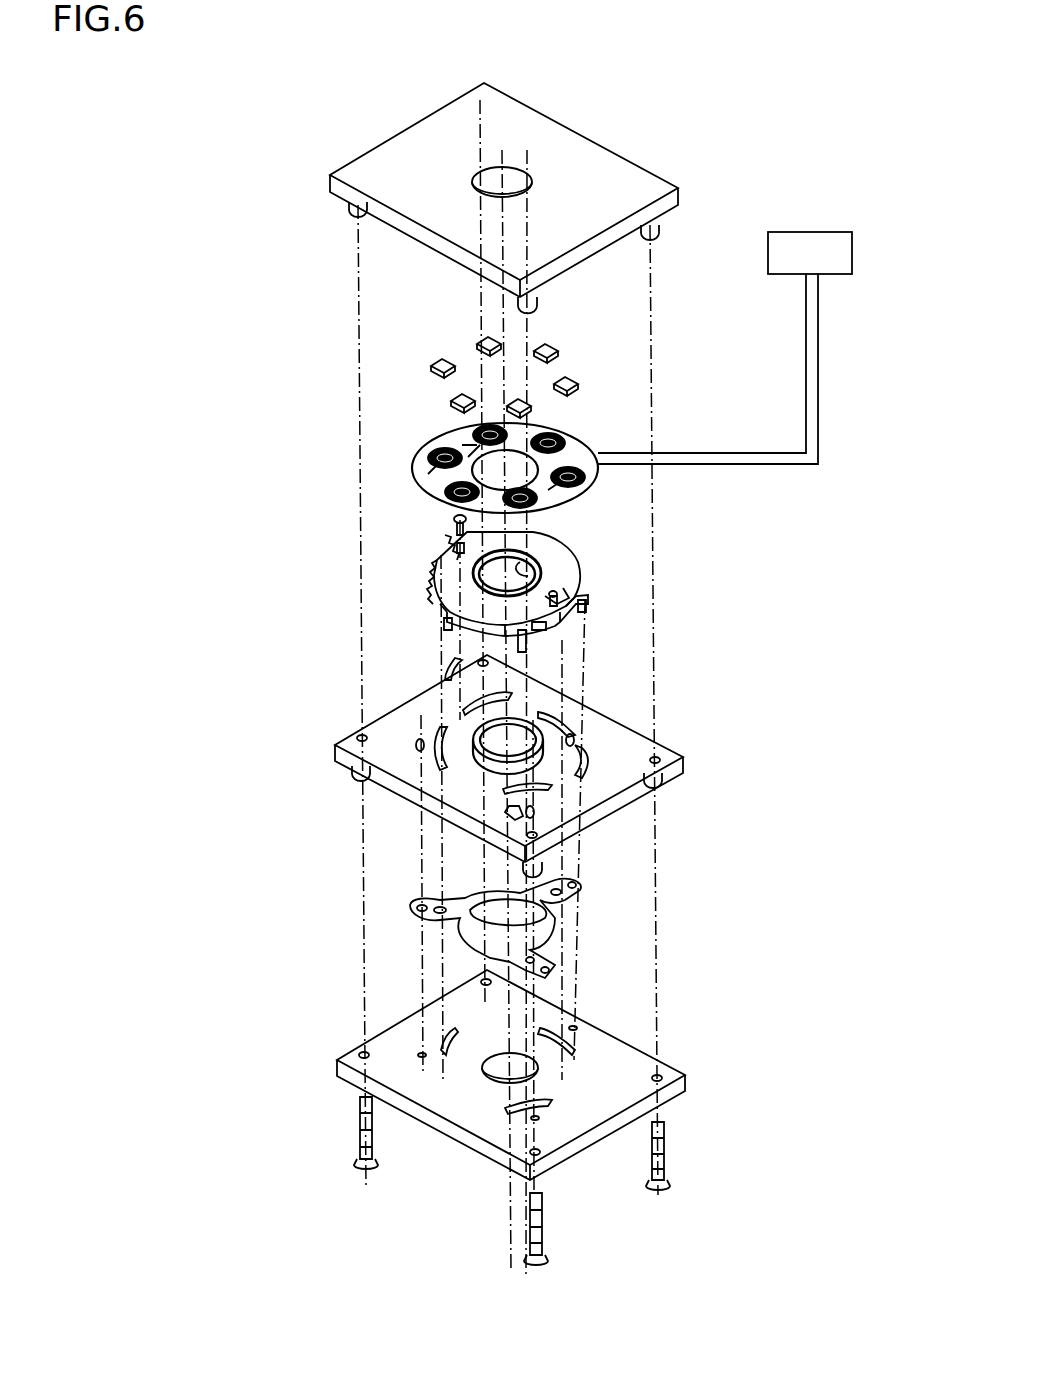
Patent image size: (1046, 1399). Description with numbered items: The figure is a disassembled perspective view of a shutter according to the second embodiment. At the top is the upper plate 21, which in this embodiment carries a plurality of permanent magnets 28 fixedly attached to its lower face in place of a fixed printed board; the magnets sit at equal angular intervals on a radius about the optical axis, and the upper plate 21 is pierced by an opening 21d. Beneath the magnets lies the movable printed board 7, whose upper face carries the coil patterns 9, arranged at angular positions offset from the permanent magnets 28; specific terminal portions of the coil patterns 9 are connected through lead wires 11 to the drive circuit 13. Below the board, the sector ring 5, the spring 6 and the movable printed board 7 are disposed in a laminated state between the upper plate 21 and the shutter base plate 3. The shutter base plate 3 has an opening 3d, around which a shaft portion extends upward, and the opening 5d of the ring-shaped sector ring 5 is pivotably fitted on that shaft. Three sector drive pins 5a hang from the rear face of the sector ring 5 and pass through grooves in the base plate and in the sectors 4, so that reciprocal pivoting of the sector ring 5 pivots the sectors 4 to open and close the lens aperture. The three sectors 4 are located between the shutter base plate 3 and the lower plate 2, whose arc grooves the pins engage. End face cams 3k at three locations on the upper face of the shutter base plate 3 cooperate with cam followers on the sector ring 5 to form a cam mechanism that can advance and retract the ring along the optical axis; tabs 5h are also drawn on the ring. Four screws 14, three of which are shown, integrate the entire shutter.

The lower plate 2 is at (322, 1065).
The shutter base plate 3 is at (461, 766).
The opening 3d is at (545, 715).
The end face cams 3k is at (470, 700).
The sectors 4 is at (392, 912).
The sector ring 5 is at (454, 588).
The sector drive pins 5a is at (540, 632).
The opening 5d is at (520, 570).
The rotor tabs 5h is at (586, 606).
The spring 6 is at (452, 522).
The movable printed board 7 is at (408, 478).
The coil patterns 9 is at (432, 452).
The lead wires 11 is at (757, 466).
The drive circuit 13 is at (806, 232).
The screws 14 is at (374, 1162).
The upper plate 21 is at (318, 191).
The top plate opening 21d is at (523, 178).
The permanent magnets 28 is at (418, 380).